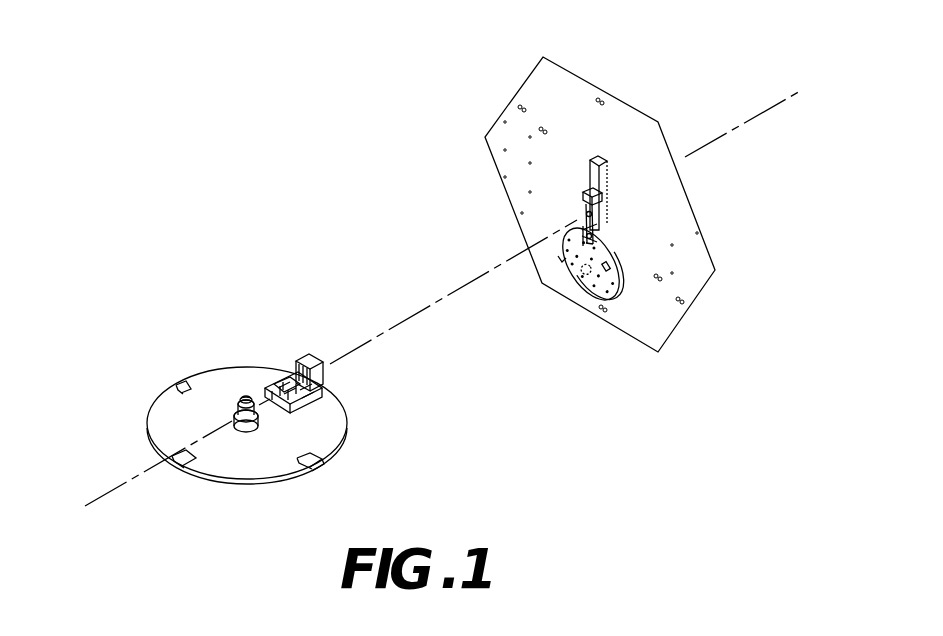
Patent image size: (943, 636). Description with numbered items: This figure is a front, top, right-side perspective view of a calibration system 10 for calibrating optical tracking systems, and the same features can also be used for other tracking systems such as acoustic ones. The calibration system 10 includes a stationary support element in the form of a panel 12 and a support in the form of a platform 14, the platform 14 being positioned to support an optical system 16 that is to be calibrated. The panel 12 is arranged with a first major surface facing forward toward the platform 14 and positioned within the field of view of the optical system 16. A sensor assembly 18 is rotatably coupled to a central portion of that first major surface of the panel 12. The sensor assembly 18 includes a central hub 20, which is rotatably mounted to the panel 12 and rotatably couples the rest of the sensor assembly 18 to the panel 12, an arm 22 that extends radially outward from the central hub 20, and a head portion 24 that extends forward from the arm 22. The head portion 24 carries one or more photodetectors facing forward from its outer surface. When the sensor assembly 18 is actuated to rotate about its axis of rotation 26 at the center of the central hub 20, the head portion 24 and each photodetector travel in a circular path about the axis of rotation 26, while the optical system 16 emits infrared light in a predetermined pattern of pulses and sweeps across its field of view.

The calibration system 10 is at (440, 96).
The panel 12 is at (688, 252).
The platform 14 is at (258, 456).
The optical system 16 is at (302, 358).
The sensor assembly 18 is at (565, 285).
The central hub 20 is at (592, 212).
The arm 22 is at (602, 233).
The head portion 24 is at (562, 256).
The axis of rotation 26 is at (100, 494).